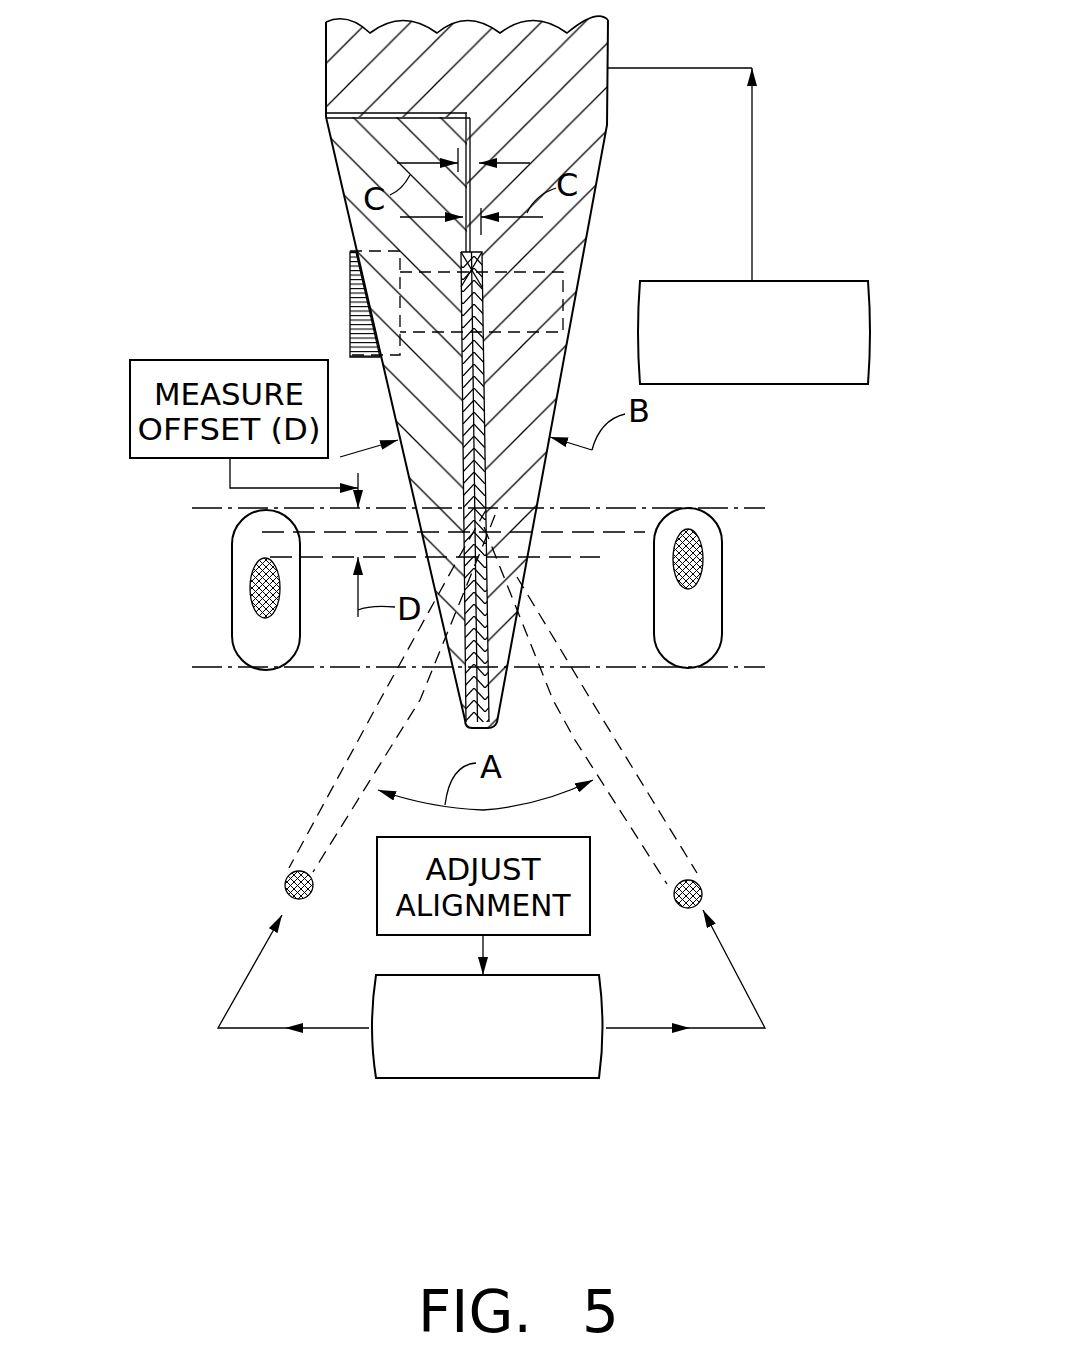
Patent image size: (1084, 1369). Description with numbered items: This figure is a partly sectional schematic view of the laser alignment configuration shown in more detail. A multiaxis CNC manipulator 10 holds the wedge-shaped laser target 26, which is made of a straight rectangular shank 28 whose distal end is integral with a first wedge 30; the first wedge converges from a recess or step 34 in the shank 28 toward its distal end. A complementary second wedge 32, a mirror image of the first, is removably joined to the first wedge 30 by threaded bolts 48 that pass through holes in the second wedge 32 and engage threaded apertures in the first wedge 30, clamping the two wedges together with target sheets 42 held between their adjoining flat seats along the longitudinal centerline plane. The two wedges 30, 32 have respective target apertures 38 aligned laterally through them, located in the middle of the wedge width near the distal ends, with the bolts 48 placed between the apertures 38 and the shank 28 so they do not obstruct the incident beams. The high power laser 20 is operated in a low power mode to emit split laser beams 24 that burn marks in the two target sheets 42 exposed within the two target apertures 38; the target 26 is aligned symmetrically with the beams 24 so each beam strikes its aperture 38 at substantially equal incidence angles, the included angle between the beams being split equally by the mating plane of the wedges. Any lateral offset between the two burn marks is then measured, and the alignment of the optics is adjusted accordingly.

The CNC manipulator 10 is at (828, 280).
The laser 20 is at (545, 1078).
The laser beam 24 is at (702, 562).
The laser target 26 is at (322, 76).
The shank 28 is at (449, 68).
The first wedge 30 is at (612, 178).
The second wedge 32 is at (338, 172).
The step 34 is at (386, 118).
The target aperture 38 is at (512, 512).
The target sheet 42 is at (462, 398).
The threaded bolt 48 is at (352, 305).